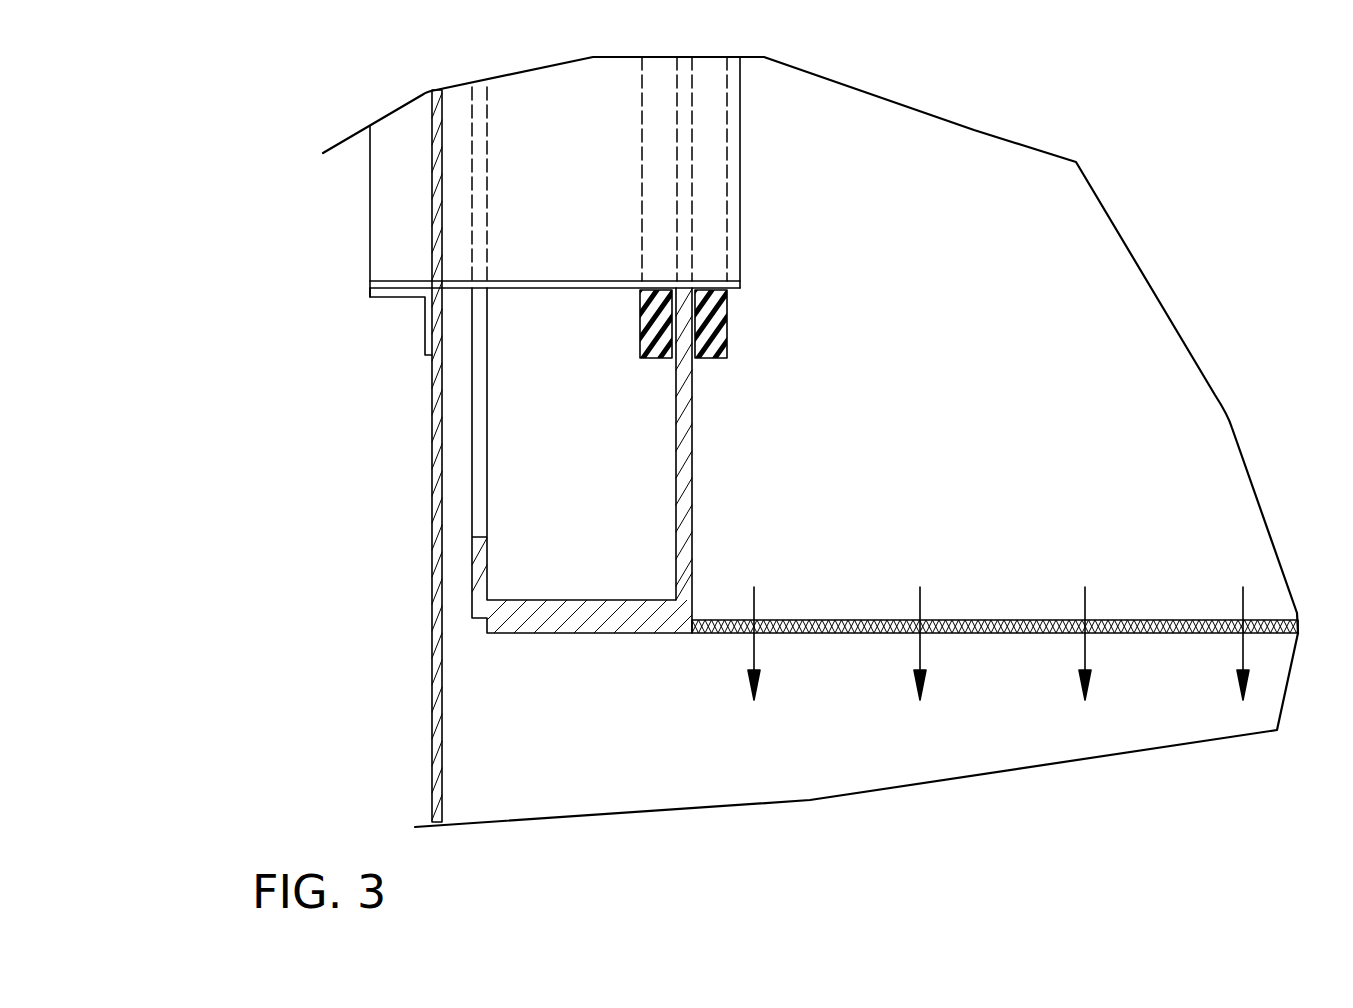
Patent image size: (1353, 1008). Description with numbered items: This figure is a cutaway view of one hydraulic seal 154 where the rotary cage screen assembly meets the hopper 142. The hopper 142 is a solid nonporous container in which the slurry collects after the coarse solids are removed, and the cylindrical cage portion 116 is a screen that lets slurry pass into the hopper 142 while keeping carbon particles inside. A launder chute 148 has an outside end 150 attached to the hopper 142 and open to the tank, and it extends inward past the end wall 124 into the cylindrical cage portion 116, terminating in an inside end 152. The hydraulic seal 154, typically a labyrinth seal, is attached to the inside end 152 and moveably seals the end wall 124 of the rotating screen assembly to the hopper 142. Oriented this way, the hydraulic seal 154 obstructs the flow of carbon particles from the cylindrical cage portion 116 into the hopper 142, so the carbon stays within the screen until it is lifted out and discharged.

The cylindrical cage portion 116 is at (988, 633).
The end wall 124 is at (693, 510).
The hopper 142 is at (432, 527).
The launder chute 148 is at (545, 280).
The outside end 150 is at (370, 285).
The inside end 152 is at (741, 283).
The hydraulic seal 154 is at (728, 325).